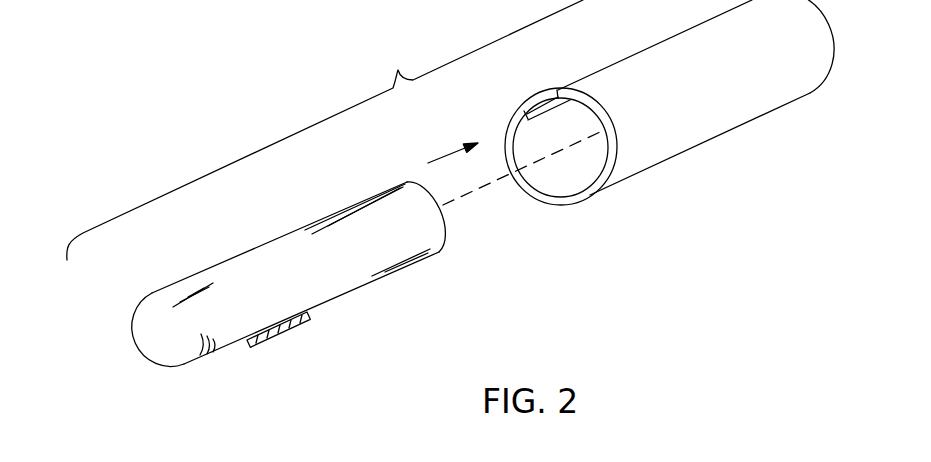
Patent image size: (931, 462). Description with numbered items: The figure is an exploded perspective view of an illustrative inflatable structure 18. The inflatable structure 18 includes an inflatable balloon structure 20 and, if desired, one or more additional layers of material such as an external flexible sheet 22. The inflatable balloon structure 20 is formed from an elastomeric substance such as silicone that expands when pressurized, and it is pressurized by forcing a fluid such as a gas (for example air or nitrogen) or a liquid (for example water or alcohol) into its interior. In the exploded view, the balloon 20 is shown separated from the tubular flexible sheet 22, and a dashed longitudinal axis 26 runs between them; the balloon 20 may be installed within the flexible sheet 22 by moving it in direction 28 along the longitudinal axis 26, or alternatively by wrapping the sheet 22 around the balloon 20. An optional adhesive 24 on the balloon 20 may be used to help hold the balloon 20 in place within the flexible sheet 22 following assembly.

The inflatable structure 18 is at (325, 130).
The inflatable balloon structure 20 is at (336, 286).
The external flexible sheet 22 is at (682, 153).
The adhesive 24 is at (290, 331).
The longitudinal axis 26 is at (493, 182).
The direction 28 is at (443, 153).